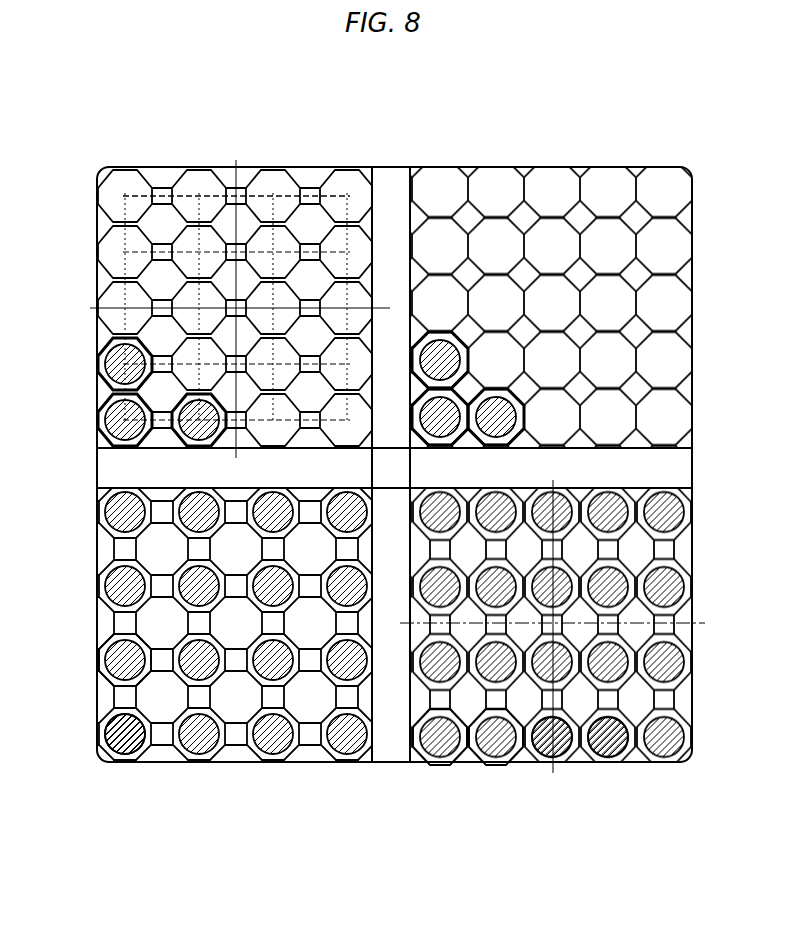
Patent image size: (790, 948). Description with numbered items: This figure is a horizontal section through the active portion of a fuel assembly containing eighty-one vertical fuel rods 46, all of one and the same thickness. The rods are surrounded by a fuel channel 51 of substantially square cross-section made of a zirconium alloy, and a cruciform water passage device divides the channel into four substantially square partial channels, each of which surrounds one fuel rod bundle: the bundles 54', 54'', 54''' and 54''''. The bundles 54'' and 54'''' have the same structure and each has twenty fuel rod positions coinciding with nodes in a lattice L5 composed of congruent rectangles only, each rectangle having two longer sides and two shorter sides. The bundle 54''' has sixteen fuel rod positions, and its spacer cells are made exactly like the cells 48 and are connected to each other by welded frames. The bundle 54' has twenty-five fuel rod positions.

The vertical fuel rods 46 is at (113, 422).
The spacer cells 48 is at (102, 383).
The fuel channel 51 is at (393, 168).
The lattice L5 is at (300, 160).
The fuel rod bundle 54' is at (551, 254).
The fuel rod bundle 54'' is at (240, 259).
The fuel rod bundle 54''' is at (234, 686).
The fuel rod bundle 54'''' is at (552, 682).